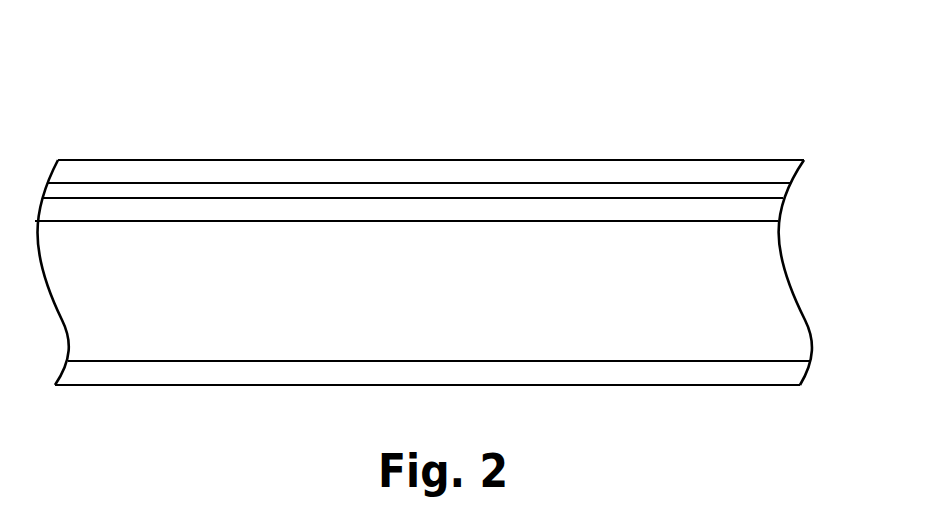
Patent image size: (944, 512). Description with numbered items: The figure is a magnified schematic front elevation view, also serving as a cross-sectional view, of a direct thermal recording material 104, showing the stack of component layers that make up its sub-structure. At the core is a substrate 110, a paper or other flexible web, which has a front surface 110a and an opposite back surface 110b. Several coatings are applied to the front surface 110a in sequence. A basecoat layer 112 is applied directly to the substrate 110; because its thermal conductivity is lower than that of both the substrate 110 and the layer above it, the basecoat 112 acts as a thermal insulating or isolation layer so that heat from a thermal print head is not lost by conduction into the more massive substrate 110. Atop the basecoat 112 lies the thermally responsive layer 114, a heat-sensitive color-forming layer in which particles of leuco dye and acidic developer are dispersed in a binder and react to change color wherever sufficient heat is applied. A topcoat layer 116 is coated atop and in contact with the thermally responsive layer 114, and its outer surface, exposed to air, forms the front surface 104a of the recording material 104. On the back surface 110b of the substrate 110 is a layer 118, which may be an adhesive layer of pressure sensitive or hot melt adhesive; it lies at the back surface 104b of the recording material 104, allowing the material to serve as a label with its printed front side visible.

The direct thermal recording material 104 is at (140, 60).
The front surface of the recording material 104a is at (543, 153).
The back surface of the recording material 104b is at (573, 392).
The substrate 110 is at (775, 283).
The front surface of the substrate 110a is at (202, 214).
The back surface of the substrate 110b is at (165, 370).
The basecoat layer 112 is at (772, 212).
The thermally responsive layer 114 is at (778, 191).
The topcoat layer 116 is at (782, 168).
The adhesive layer 118 is at (793, 372).